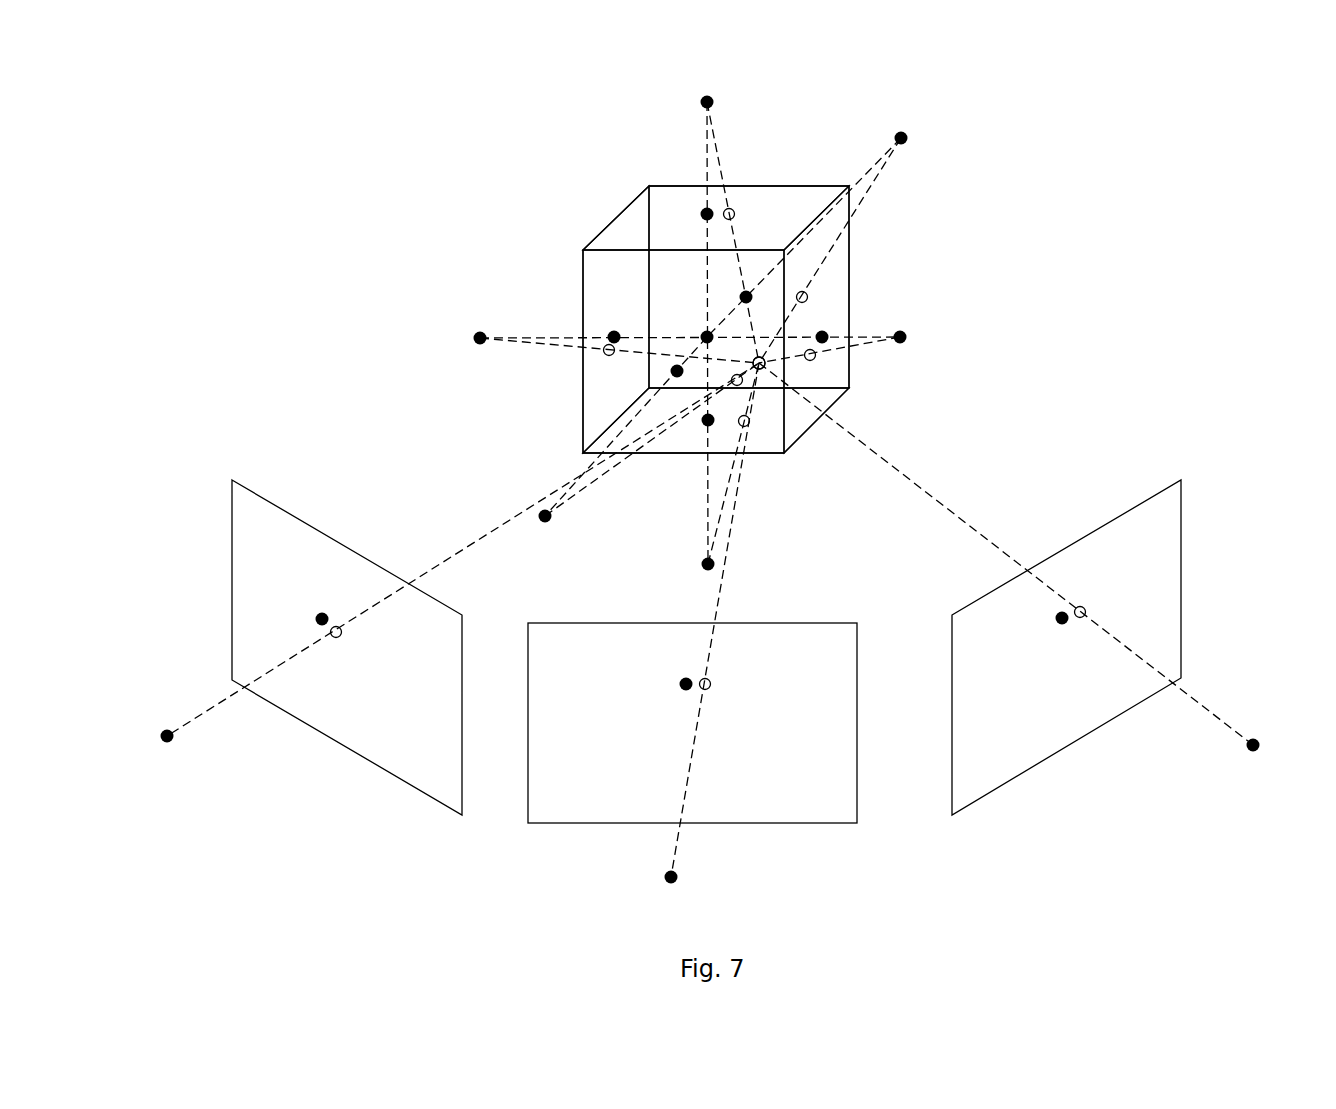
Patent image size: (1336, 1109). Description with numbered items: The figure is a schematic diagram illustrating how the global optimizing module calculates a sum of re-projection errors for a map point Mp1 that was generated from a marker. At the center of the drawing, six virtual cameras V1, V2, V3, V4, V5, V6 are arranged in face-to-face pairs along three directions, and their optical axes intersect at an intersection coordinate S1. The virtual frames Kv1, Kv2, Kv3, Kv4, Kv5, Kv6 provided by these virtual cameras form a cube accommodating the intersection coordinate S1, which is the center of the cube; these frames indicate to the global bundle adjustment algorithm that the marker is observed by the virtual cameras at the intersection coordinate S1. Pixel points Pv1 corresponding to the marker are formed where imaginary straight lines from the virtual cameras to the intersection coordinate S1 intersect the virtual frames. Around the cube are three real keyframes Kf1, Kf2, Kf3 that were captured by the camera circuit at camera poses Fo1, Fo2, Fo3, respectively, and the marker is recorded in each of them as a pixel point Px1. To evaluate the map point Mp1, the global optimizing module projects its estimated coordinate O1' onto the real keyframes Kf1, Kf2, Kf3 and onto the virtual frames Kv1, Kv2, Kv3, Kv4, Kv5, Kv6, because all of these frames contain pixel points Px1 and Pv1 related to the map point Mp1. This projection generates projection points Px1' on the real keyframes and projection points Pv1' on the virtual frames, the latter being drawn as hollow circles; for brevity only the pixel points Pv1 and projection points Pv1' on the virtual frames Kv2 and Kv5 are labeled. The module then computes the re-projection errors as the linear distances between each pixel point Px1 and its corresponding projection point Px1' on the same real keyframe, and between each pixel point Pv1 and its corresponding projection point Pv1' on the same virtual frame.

The virtual camera V1 is at (920, 338).
The virtual camera V2 is at (462, 335).
The virtual camera V3 is at (917, 128).
The virtual camera V4 is at (548, 531).
The virtual camera V5 is at (708, 87).
The virtual camera V6 is at (701, 580).
The intersection coordinate S1 is at (693, 327).
The virtual frame Kv1 is at (842, 260).
The virtual frame Kv2 is at (595, 282).
The virtual frame Kv3 is at (792, 225).
The virtual frame Kv4 is at (593, 406).
The virtual frame Kv5 is at (757, 190).
The virtual frame Kv6 is at (662, 443).
The real keyframe Kf1 is at (1125, 510).
The real keyframe Kf2 is at (812, 622).
The real keyframe Kf3 is at (340, 538).
The pixel point Pv1 is at (654, 272).
The projection point Pv1' is at (691, 292).
The pixel point Px1 is at (680, 650).
The projection point Px1' is at (727, 636).
The map point Mp1 is at (762, 372).
The estimated coordinate O1' is at (805, 436).
The camera pose Fo1 is at (1270, 763).
The camera pose Fo2 is at (673, 894).
The camera pose Fo3 is at (143, 748).